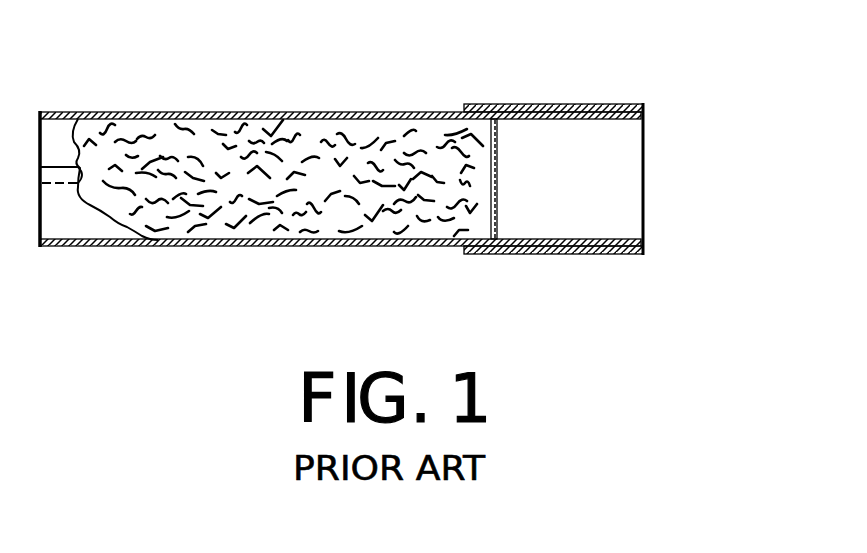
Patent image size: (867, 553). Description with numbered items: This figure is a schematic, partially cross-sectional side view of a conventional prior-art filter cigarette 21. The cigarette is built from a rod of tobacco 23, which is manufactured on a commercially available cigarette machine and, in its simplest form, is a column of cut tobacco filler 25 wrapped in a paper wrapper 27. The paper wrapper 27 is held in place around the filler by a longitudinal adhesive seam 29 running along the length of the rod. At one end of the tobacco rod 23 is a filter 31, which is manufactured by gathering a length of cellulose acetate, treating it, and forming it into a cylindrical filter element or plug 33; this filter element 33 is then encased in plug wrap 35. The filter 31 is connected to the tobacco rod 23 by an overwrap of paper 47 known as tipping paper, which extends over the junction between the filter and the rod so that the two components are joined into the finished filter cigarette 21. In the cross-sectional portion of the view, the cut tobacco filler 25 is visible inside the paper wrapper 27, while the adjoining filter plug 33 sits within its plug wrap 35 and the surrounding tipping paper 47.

The filter cigarette 21 is at (340, 167).
The rod of tobacco 23 is at (410, 90).
The cut tobacco filler 25 is at (296, 212).
The paper wrapper 27 is at (218, 247).
The longitudinal adhesive seam 29 is at (54, 177).
The filter 31 is at (601, 145).
The filter element or plug 33 is at (622, 207).
The plug wrap 35 is at (564, 119).
The tipping paper 47 is at (546, 105).